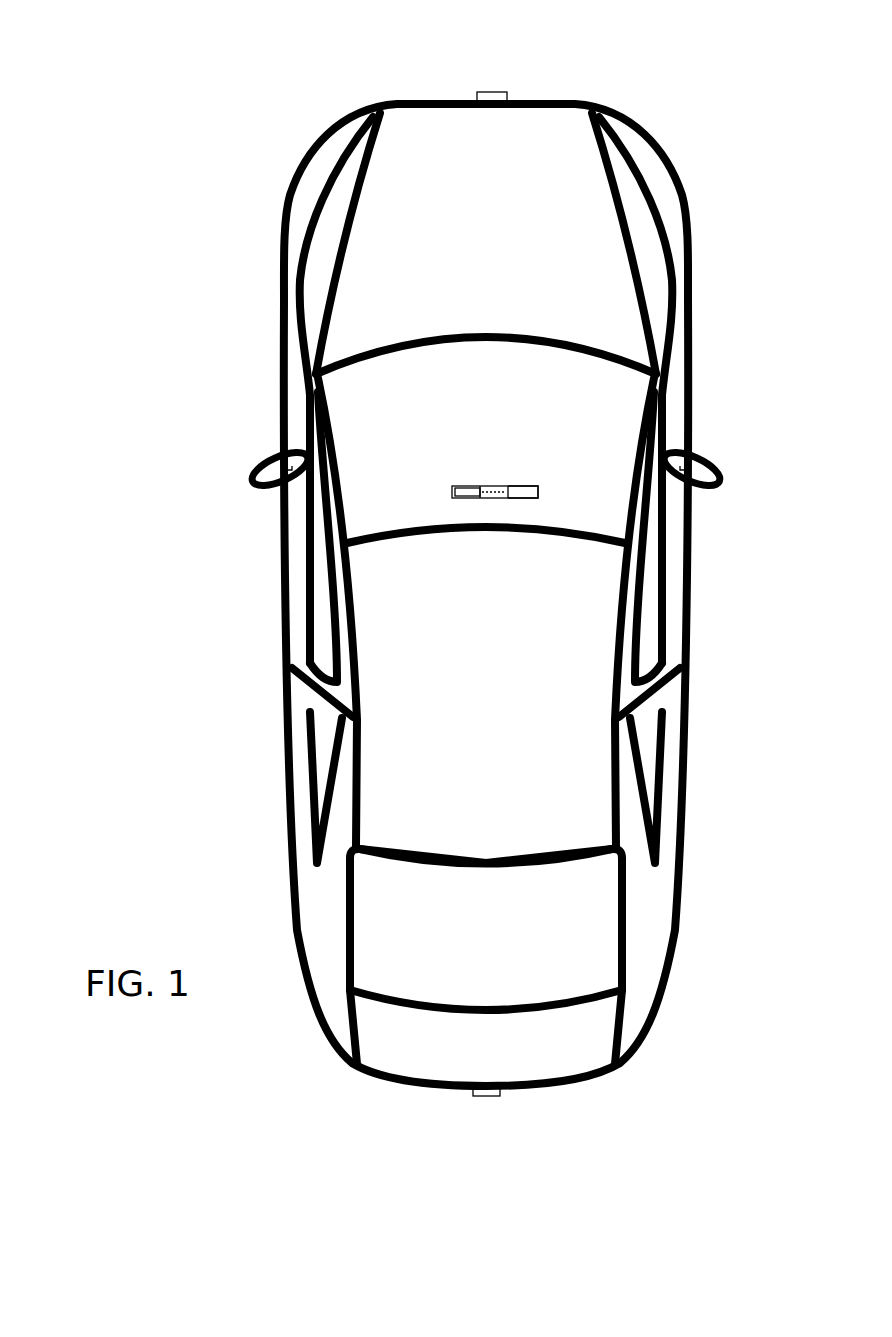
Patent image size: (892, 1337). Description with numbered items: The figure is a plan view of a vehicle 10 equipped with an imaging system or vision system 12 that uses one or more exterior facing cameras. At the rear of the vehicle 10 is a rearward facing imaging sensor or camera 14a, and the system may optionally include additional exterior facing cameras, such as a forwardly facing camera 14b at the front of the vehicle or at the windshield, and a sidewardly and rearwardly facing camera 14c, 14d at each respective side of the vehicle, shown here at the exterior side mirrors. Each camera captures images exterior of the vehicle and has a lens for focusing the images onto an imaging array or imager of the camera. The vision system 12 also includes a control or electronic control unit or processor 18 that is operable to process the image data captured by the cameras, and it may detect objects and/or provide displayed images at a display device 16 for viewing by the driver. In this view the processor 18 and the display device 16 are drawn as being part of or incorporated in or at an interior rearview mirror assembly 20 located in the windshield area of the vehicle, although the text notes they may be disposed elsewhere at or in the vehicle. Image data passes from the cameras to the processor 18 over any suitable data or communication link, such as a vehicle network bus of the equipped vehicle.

The vehicle 10 is at (237, 197).
The vision system 12 is at (437, 1115).
The rearward facing camera 14a is at (488, 1091).
The forwardly facing camera 14b is at (497, 93).
The sidewardly/rearwardly facing camera 14c is at (277, 463).
The sidewardly/rearwardly facing camera 14d is at (695, 463).
The display device 16 is at (467, 488).
The electronic control unit (ECU) or processor 18 is at (490, 483).
The interior rearview mirror assembly 20 is at (537, 487).